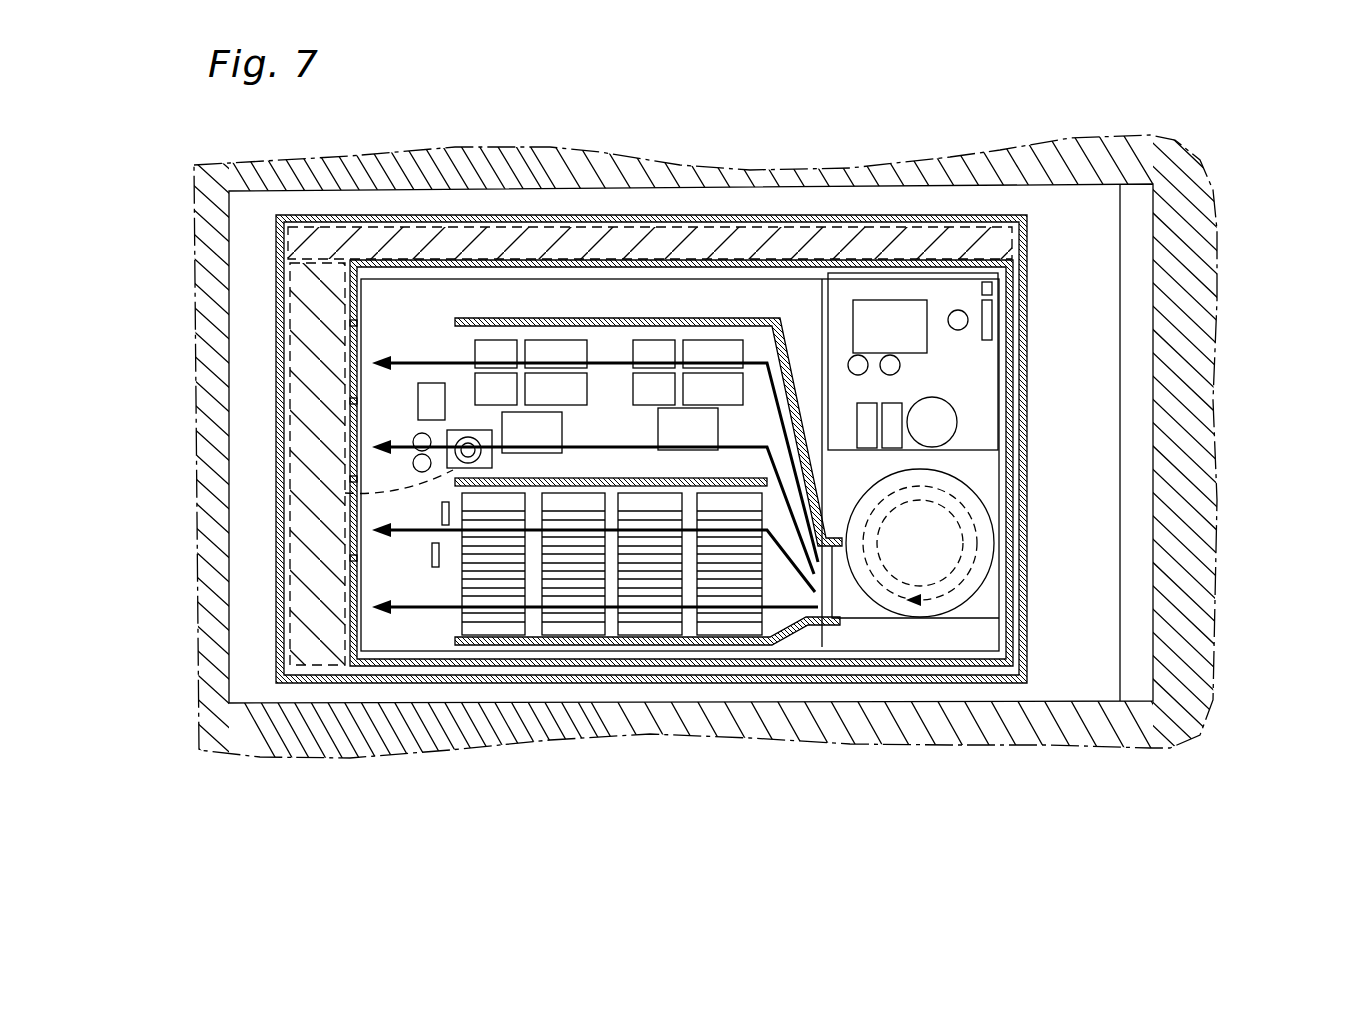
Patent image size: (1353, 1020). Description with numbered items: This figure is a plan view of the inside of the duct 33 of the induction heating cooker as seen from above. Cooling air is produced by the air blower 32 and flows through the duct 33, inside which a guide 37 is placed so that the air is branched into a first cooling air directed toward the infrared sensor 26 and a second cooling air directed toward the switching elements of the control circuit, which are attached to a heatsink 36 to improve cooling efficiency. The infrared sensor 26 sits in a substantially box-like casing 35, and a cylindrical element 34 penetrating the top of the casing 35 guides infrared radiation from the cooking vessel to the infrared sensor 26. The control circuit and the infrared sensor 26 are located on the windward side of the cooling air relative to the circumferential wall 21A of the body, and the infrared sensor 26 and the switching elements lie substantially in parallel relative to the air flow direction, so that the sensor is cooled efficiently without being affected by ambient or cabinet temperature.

The circumferential wall 21A is at (620, 259).
The infrared sensor 26 is at (345, 493).
The air blower 32 is at (903, 567).
The duct 33 is at (730, 318).
The cylindrical element 34 is at (472, 438).
The casing 35 is at (453, 437).
The heatsink 36 is at (713, 628).
The guide 37 is at (580, 478).